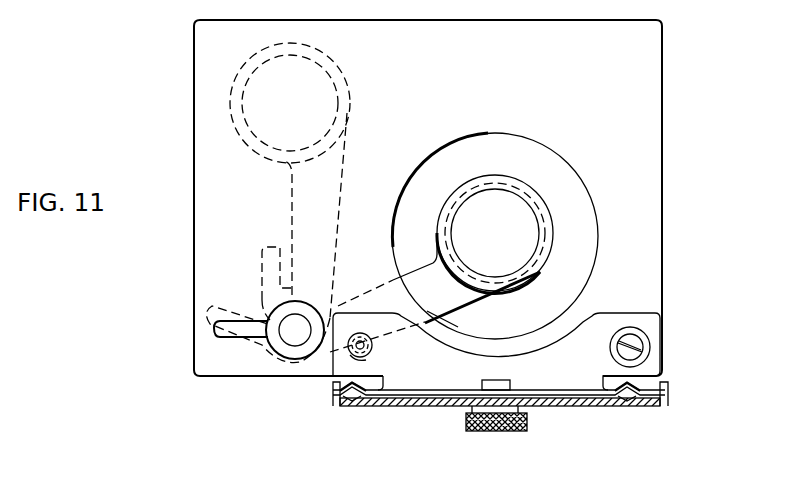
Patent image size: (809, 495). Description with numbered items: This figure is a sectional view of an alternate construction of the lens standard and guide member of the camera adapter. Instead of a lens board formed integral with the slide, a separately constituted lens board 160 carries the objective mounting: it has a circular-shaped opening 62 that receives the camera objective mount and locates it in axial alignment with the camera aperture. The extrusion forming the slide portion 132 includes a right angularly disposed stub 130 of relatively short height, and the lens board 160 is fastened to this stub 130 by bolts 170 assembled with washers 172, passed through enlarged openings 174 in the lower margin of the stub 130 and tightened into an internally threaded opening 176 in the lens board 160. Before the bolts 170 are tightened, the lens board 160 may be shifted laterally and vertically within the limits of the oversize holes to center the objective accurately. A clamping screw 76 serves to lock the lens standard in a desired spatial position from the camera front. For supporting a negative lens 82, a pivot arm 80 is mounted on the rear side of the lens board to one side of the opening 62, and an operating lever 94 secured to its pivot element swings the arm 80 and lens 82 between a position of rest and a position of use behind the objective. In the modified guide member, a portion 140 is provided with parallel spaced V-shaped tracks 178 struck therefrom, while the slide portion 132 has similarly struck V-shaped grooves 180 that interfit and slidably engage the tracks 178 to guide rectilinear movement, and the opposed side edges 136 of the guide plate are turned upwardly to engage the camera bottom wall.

The lens board 160 is at (661, 129).
The operating lever 94 is at (214, 335).
The circular-shaped opening 62 is at (588, 189).
The negative lens 82 is at (508, 244).
The pivot arm 80 is at (449, 311).
The stub 130 is at (627, 318).
The washers 172 is at (644, 336).
The bolts 170 is at (645, 349).
The internally threaded opening 176 is at (373, 346).
The enlarged openings 174 is at (367, 357).
The slide portion 132 is at (580, 387).
The V-shaped grooves 180 is at (346, 392).
The V-shaped tracks 178 is at (360, 400).
The portion of guide member 140 is at (583, 402).
The opposed side edges 136 is at (332, 388).
The clamping screw 76 is at (486, 432).